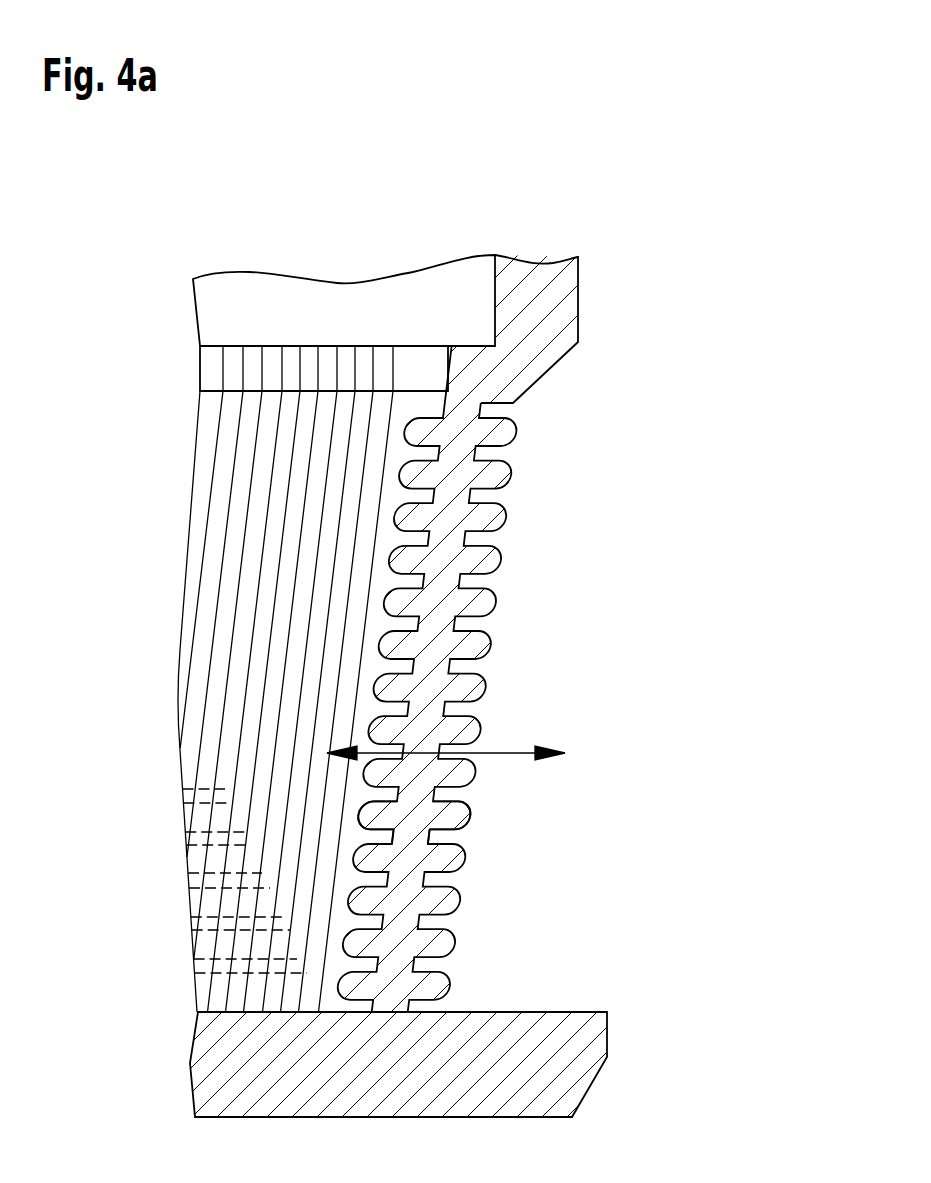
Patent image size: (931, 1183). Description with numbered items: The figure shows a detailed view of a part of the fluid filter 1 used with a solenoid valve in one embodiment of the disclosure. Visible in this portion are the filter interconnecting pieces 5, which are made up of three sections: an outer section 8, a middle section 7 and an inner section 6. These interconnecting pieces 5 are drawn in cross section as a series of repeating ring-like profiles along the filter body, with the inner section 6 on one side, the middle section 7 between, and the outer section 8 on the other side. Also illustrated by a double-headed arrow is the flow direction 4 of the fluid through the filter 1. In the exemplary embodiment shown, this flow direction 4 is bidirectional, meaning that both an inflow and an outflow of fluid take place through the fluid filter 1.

The fluid filter 1 is at (465, 683).
The flow direction 4 is at (497, 752).
The filter interconnecting pieces 5 is at (499, 561).
The inner section 6 is at (374, 835).
The middle section 7 is at (410, 848).
The outer section 8 is at (444, 847).